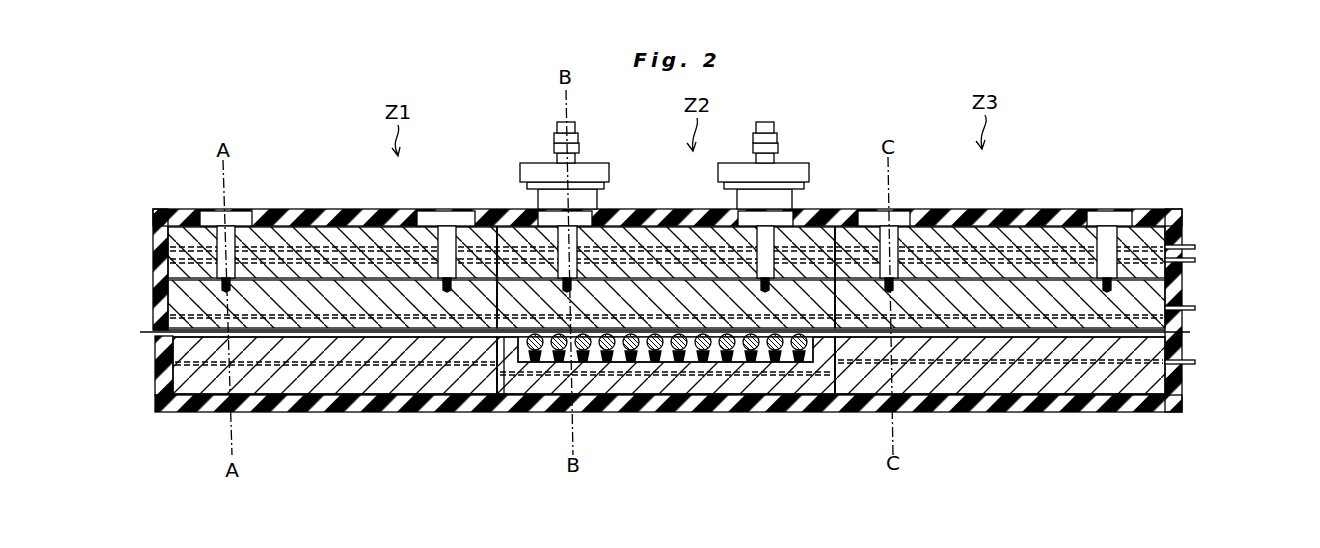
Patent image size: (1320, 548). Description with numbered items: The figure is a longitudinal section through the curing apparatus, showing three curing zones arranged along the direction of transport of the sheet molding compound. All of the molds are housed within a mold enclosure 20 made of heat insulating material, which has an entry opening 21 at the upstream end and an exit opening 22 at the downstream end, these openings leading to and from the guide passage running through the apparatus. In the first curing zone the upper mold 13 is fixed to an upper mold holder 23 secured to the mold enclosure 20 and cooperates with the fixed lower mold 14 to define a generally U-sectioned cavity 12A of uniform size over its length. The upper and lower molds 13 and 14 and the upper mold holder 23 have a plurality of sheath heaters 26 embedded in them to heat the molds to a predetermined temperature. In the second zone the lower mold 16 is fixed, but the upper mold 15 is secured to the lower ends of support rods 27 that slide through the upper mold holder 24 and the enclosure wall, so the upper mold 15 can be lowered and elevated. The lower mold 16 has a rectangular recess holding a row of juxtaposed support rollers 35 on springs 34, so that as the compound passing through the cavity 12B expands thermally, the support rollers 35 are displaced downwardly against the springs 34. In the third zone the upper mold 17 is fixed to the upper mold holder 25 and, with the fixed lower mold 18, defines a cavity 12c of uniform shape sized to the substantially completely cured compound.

The cavity 12A is at (193, 340).
The cavity 12B is at (513, 340).
The cavity 12c is at (928, 370).
The upper mold 13 is at (337, 292).
The lower mold 14 is at (305, 388).
The upper mold 15 is at (647, 292).
The lower mold 16 is at (633, 388).
The upper mold 17 is at (955, 296).
The lower mold 18 is at (1040, 410).
The mold enclosure 20 is at (1010, 382).
The entry opening 21 is at (153, 333).
The exit opening 22 is at (1188, 332).
The upper mold holder 23 is at (372, 230).
The upper mold holder 24 is at (686, 232).
The upper mold holder 25 is at (1040, 232).
The sheath heaters 26 is at (248, 248).
The support rods 27 is at (582, 245).
The springs 34 is at (785, 405).
The support rollers 35 is at (695, 348).